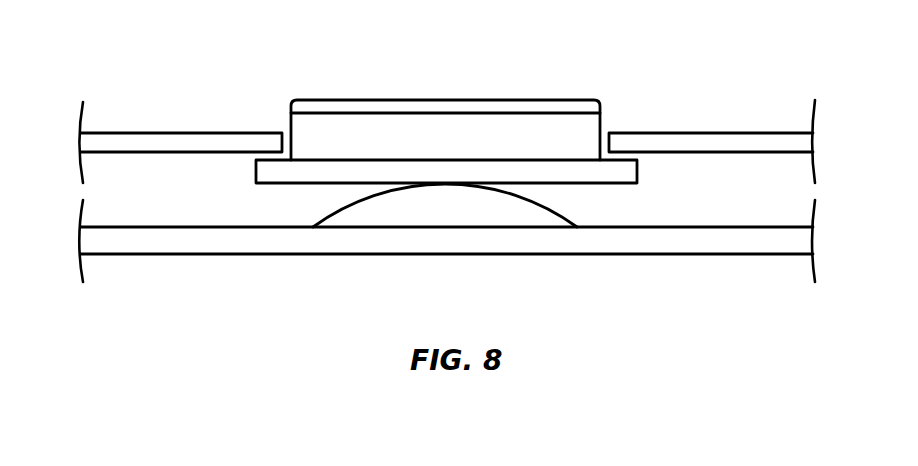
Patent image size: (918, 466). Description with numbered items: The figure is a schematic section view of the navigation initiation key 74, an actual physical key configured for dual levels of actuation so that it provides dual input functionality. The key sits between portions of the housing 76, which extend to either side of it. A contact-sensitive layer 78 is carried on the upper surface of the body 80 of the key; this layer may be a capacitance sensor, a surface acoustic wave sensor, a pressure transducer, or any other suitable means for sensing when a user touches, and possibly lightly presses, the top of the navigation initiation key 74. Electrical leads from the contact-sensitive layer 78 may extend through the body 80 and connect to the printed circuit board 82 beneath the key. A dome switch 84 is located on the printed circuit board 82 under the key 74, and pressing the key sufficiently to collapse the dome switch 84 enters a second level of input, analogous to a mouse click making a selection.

The navigation initiation key 74 is at (282, 45).
The housing 76 is at (187, 142).
The contact-sensitive layer 78 is at (470, 103).
The body 80 is at (435, 135).
The printed circuit board 82 is at (485, 240).
The dome switch 84 is at (445, 210).